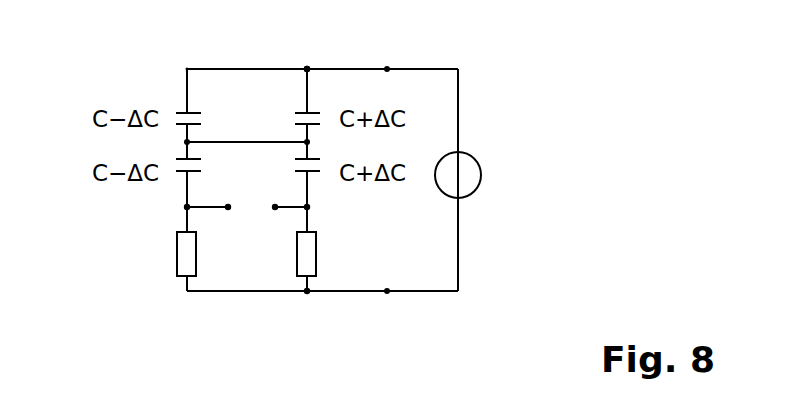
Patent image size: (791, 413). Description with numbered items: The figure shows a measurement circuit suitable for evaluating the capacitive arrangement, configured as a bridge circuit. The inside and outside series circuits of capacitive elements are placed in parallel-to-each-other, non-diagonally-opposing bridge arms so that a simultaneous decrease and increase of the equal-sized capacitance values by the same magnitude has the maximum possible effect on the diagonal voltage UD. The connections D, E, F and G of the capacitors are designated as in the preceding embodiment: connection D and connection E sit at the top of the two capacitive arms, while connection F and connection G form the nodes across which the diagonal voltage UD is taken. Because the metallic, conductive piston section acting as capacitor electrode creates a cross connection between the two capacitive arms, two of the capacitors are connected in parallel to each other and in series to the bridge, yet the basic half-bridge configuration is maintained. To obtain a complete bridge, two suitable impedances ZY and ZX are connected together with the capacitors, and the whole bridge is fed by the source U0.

The connection D is at (191, 56).
The connection E is at (305, 56).
The connection F is at (175, 209).
The connection G is at (321, 209).
The diagonal voltage UD is at (247, 211).
The impedance ZY is at (162, 254).
The impedance ZX is at (331, 254).
The supply voltage source U0 is at (478, 175).